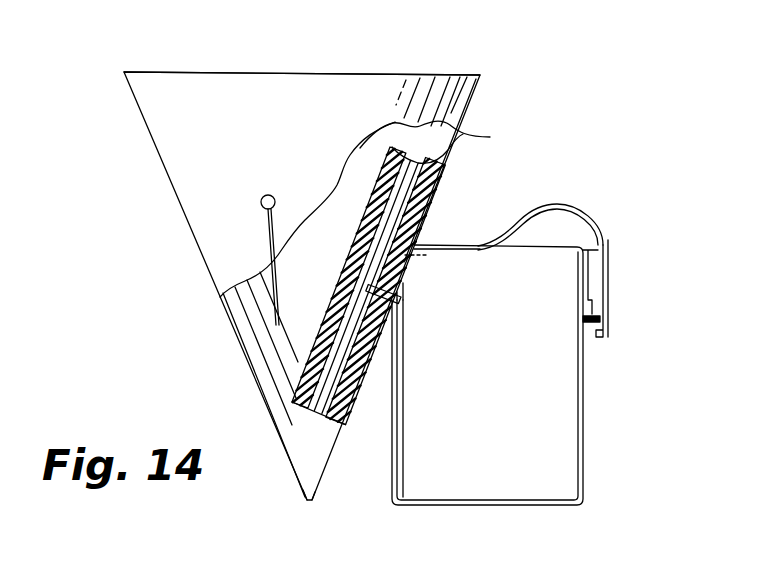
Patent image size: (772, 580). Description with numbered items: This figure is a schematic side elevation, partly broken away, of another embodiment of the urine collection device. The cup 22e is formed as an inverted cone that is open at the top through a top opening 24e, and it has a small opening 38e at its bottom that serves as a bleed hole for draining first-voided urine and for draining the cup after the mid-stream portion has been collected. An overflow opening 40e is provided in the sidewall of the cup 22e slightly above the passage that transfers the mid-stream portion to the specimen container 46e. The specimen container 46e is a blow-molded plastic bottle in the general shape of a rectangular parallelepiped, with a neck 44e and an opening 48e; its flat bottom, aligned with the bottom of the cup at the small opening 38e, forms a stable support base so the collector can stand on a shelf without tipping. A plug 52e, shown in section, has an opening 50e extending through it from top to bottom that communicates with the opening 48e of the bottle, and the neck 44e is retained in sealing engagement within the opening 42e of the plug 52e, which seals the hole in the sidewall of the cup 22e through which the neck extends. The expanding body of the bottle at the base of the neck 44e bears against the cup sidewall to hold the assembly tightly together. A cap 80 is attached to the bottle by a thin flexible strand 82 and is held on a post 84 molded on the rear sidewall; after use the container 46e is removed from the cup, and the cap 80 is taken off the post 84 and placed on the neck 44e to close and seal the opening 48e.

The cup 22e is at (188, 231).
The top opening 24e is at (305, 72).
The small opening 38e is at (310, 503).
The overflow opening 40e is at (263, 196).
The opening of the plug 42e is at (416, 213).
The neck 44e is at (436, 184).
The specimen container 46e is at (490, 468).
The opening of the bottle 48e is at (365, 266).
The opening of the plug 50e is at (464, 137).
The plug 52e is at (400, 147).
The cap 80 is at (606, 252).
The thin flexible strand 82 is at (556, 204).
The post 84 is at (590, 316).